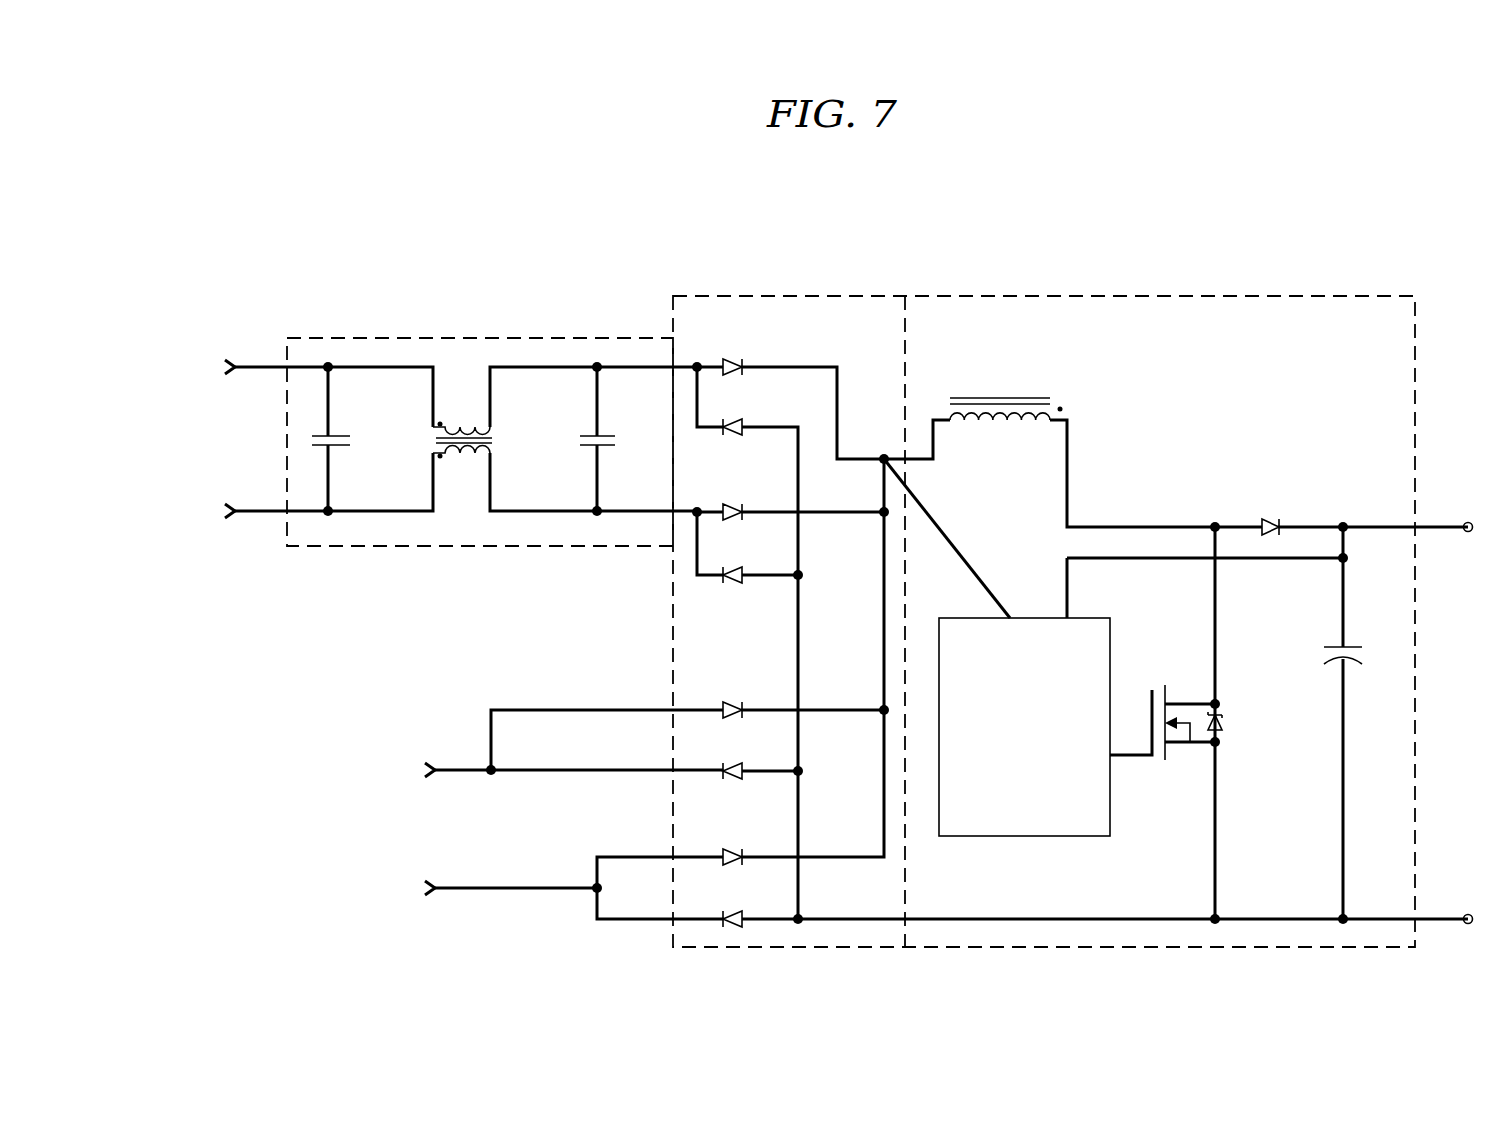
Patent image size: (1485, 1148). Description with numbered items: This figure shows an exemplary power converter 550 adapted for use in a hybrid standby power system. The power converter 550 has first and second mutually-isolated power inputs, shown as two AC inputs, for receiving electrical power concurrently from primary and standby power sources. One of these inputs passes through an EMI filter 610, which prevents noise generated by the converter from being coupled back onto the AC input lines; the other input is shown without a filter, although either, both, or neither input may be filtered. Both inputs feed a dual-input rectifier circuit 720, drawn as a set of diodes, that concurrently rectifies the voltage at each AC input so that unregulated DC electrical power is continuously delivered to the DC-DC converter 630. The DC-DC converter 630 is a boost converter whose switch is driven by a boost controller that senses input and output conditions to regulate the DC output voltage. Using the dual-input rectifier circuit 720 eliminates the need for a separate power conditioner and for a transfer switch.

The power converter 550 is at (1354, 264).
The EMI filter 610 is at (477, 338).
The dual-input rectifier circuit 720 is at (802, 296).
The DC-DC converter 630 is at (1392, 337).